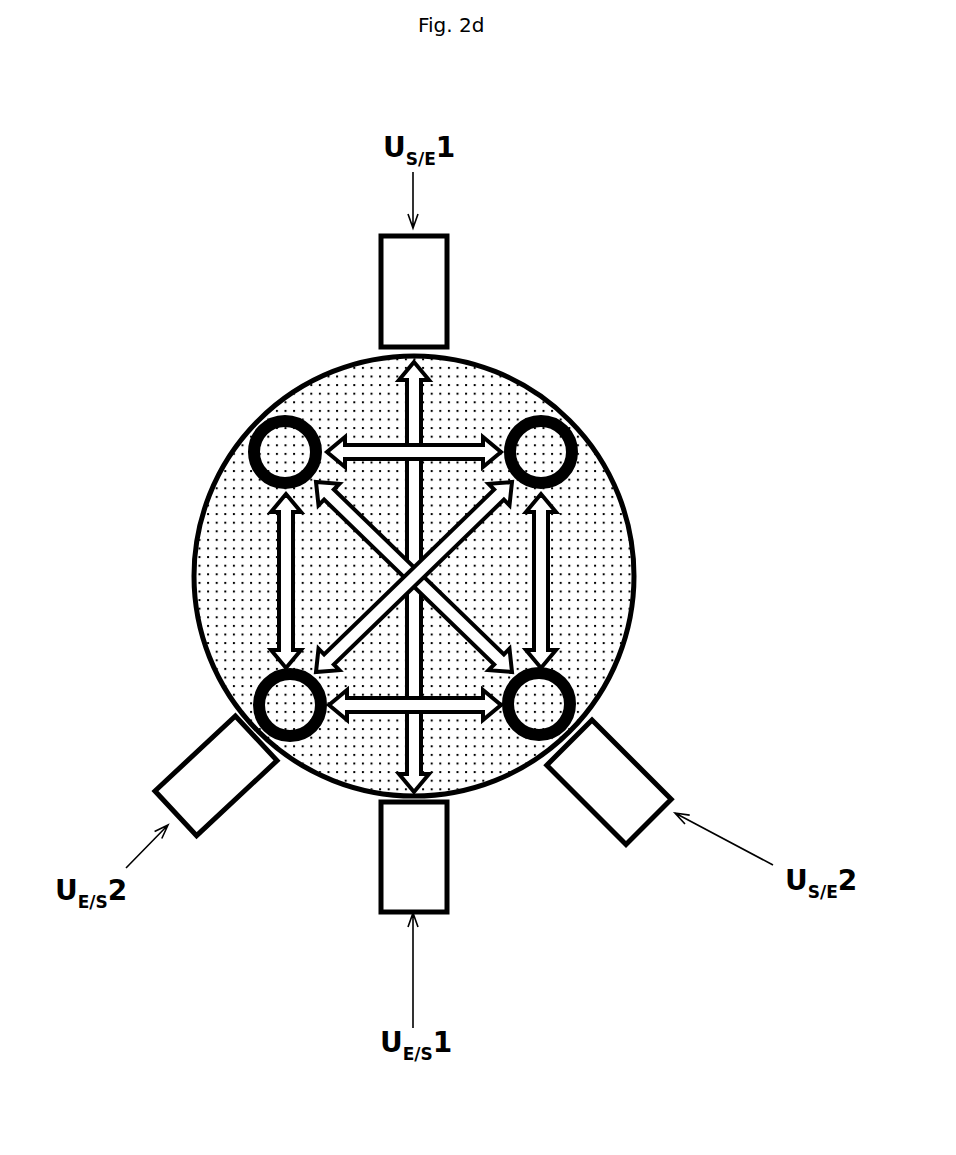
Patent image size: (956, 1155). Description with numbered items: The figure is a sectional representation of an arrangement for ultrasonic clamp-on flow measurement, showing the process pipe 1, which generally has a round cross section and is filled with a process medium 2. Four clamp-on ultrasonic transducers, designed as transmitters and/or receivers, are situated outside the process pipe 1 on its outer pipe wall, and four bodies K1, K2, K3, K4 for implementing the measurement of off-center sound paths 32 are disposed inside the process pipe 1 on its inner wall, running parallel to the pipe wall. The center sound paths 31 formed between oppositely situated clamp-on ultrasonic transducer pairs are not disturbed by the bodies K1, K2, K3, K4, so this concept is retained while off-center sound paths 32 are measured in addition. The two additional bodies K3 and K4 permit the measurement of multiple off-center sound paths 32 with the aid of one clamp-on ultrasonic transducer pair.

The process pipe 1 is at (650, 624).
The process medium 2 is at (460, 375).
The center sound paths 31 is at (432, 521).
The off-center sound paths 32 is at (517, 609).
The body K1 is at (244, 412).
The body K2 is at (228, 685).
The body K3 is at (526, 400).
The body K4 is at (534, 754).